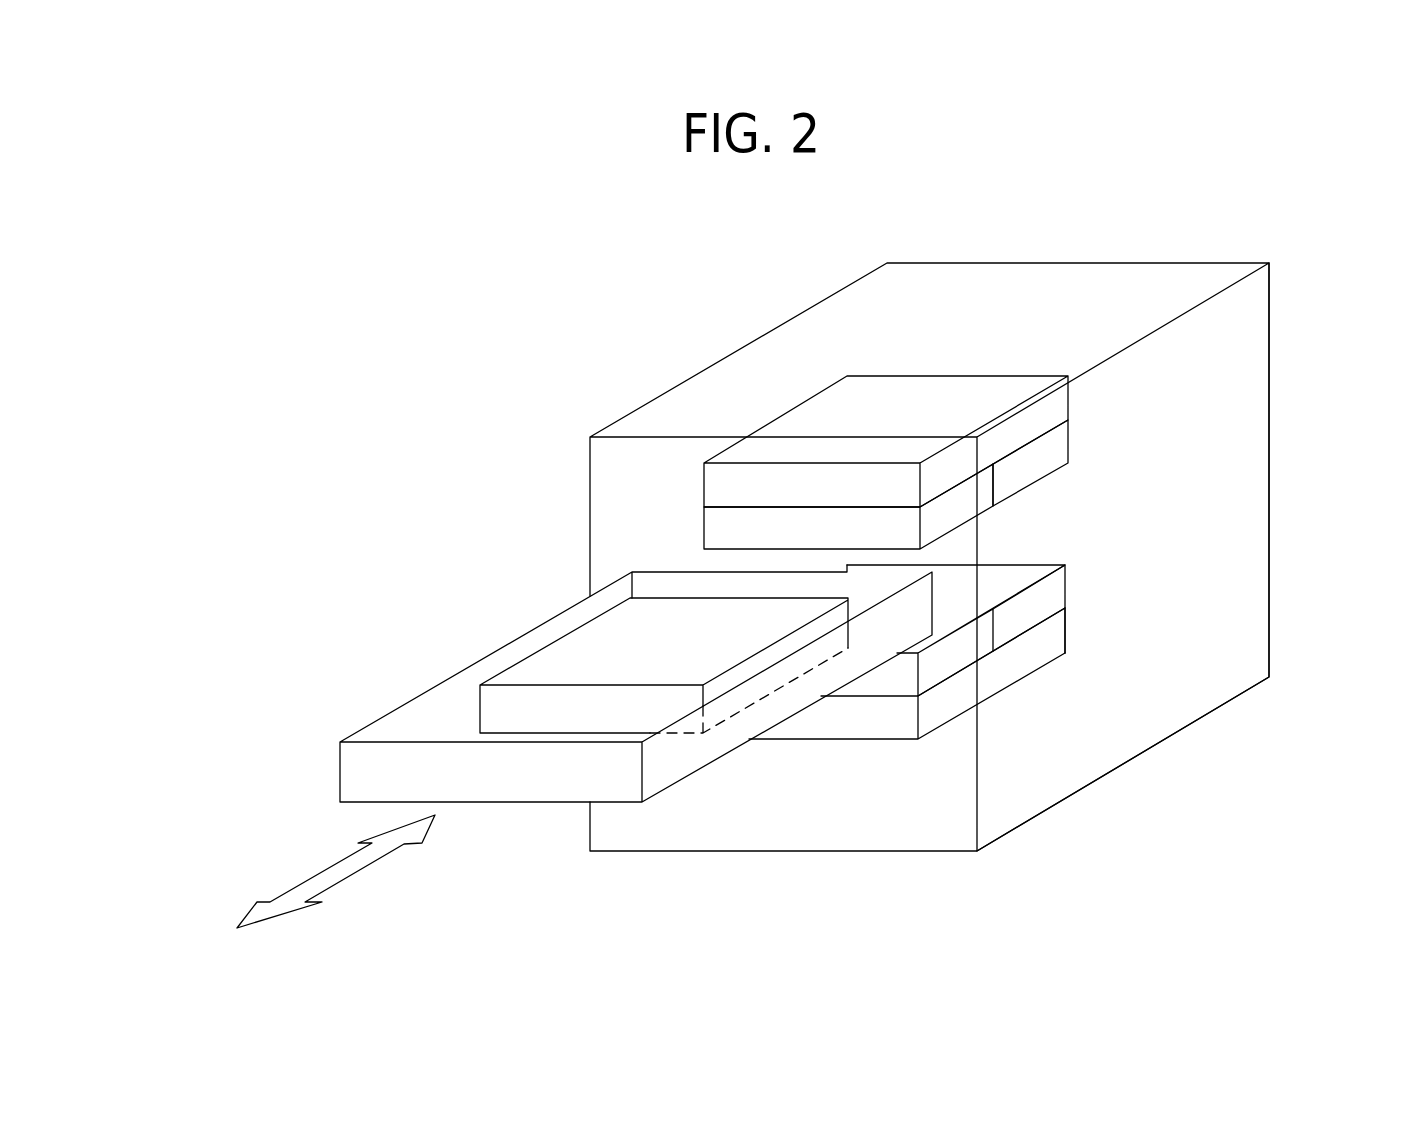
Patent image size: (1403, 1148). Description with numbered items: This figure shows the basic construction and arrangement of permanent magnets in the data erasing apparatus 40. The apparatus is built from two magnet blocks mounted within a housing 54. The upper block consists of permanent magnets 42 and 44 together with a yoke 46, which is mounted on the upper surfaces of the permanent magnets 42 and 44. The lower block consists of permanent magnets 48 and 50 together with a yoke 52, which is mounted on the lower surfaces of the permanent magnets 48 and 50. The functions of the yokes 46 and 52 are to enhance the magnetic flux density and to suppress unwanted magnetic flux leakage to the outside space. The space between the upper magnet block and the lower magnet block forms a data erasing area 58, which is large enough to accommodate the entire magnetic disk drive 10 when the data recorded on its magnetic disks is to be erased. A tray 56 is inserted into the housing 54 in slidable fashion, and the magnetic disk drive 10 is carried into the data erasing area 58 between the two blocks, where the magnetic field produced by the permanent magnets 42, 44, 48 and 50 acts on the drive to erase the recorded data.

The magnetic disk drive 10 is at (518, 679).
The data erasing apparatus 40 is at (1153, 751).
The permanent magnet 42 is at (988, 487).
The permanent magnet 44 is at (1052, 452).
The yoke 46 is at (940, 398).
The permanent magnet 48 is at (930, 663).
The permanent magnet 50 is at (1057, 597).
The yoke 52 is at (1053, 646).
The housing 54 is at (1250, 570).
The tray 56 is at (355, 773).
The data erasing area 58 is at (1057, 544).